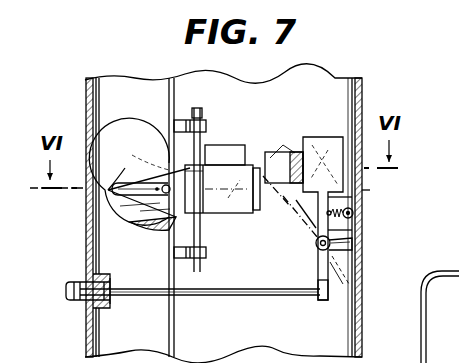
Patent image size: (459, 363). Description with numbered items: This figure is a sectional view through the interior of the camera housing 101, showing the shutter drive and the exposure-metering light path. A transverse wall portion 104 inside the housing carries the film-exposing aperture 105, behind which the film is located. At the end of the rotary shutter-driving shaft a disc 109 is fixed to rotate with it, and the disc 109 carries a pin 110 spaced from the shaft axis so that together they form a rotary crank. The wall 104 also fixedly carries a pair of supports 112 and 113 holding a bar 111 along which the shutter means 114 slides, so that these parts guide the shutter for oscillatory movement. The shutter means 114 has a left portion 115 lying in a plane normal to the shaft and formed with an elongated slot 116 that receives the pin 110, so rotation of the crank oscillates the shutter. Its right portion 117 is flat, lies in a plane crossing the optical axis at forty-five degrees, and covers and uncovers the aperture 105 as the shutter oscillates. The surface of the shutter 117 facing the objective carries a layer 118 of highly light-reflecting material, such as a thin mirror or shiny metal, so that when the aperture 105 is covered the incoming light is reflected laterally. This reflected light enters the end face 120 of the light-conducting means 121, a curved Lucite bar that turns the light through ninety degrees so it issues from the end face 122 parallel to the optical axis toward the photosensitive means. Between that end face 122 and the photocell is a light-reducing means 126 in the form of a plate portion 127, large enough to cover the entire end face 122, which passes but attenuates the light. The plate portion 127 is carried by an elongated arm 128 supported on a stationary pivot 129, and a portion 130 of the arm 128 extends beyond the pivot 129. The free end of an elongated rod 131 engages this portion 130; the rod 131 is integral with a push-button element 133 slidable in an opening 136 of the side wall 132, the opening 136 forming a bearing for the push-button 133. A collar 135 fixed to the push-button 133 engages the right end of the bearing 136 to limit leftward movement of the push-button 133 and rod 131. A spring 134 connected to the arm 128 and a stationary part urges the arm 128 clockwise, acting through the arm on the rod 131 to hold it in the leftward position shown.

The camera housing 101 is at (363, 85).
The transverse wall portion 104 is at (346, 326).
The film-exposing aperture 105 is at (226, 148).
The disc 109 is at (140, 142).
The pin 110 is at (162, 224).
The bar 111 is at (202, 111).
The support 112 is at (174, 124).
The support 113 is at (176, 262).
The shutter means 114 is at (206, 226).
The left portion of the shutter means 115 is at (126, 165).
The elongated slot 116 is at (112, 191).
The right portion of the shutter means 117 is at (257, 209).
The light-reflecting layer 118 is at (223, 210).
The end face of the light-conducting means 120 is at (266, 158).
The light-conducting means 121 is at (292, 152).
The end face of the light-conducting means 122 is at (352, 180).
The light-reducing means 126 is at (354, 211).
The plate portion 127 is at (318, 148).
The elongated arm 128 is at (315, 232).
The stationary pivot 129 is at (337, 241).
The portion of the arm 130 is at (344, 294).
The elongated rod 131 is at (232, 298).
The side wall 132 is at (90, 328).
The push-button element 133 is at (82, 284).
The spring 134 is at (348, 232).
The collar 135 is at (111, 303).
The opening 136 is at (100, 264).